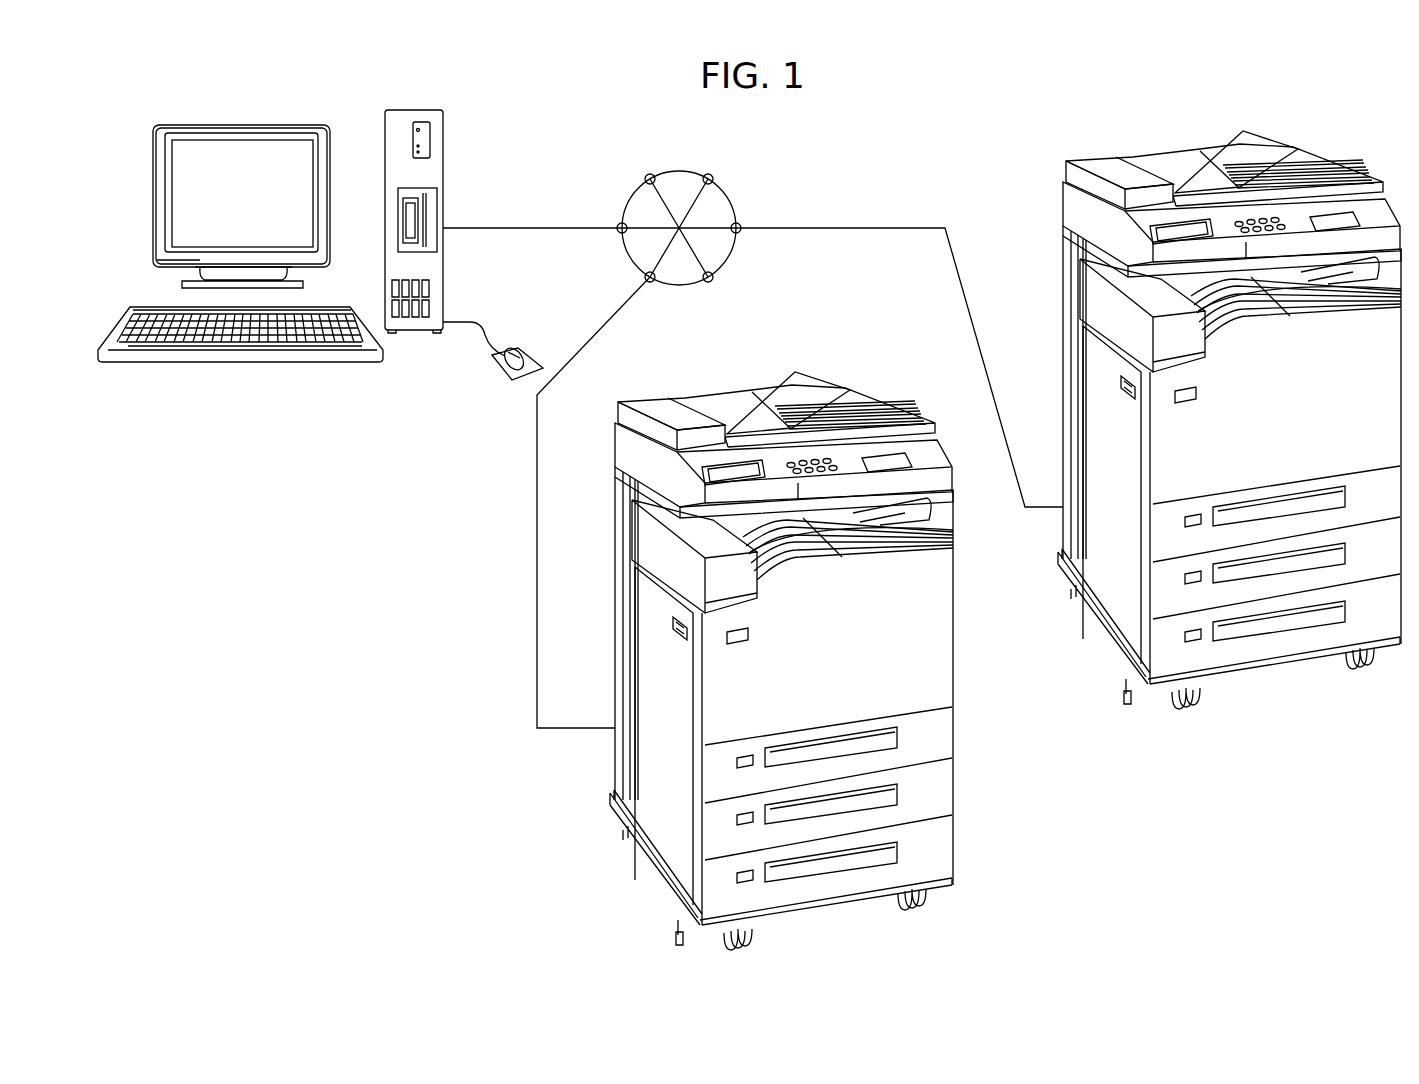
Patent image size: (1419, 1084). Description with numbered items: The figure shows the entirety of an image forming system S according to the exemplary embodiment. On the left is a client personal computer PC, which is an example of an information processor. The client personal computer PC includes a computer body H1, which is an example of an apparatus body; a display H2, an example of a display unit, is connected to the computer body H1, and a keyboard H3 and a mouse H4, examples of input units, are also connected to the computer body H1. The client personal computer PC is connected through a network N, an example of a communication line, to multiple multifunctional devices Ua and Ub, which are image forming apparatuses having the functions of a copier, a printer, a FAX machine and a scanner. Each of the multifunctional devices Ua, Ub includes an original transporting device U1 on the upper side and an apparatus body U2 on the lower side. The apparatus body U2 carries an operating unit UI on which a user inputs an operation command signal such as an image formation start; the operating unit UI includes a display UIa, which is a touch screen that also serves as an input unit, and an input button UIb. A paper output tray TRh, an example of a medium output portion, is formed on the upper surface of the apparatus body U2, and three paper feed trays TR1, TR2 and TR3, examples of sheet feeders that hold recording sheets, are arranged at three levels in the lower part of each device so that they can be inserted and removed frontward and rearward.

The image forming system S is at (219, 803).
The client personal computer PC is at (149, 89).
The computer body H1 is at (402, 113).
The display H2 is at (231, 148).
The keyboard H3 is at (134, 355).
The mouse H4 is at (520, 358).
The network N is at (685, 170).
The multifunctional device Ua is at (891, 359).
The multifunctional device Ub is at (1339, 119).
The original transporting device U1 is at (616, 412).
The apparatus body U2 is at (622, 441).
The operating unit UI is at (812, 326).
The display UIa is at (735, 470).
The input button UIb is at (818, 468).
The paper output tray TRh is at (786, 575).
The paper feed tray TR1 is at (943, 749).
The paper feed tray TR2 is at (943, 807).
The paper feed tray TR3 is at (943, 865).